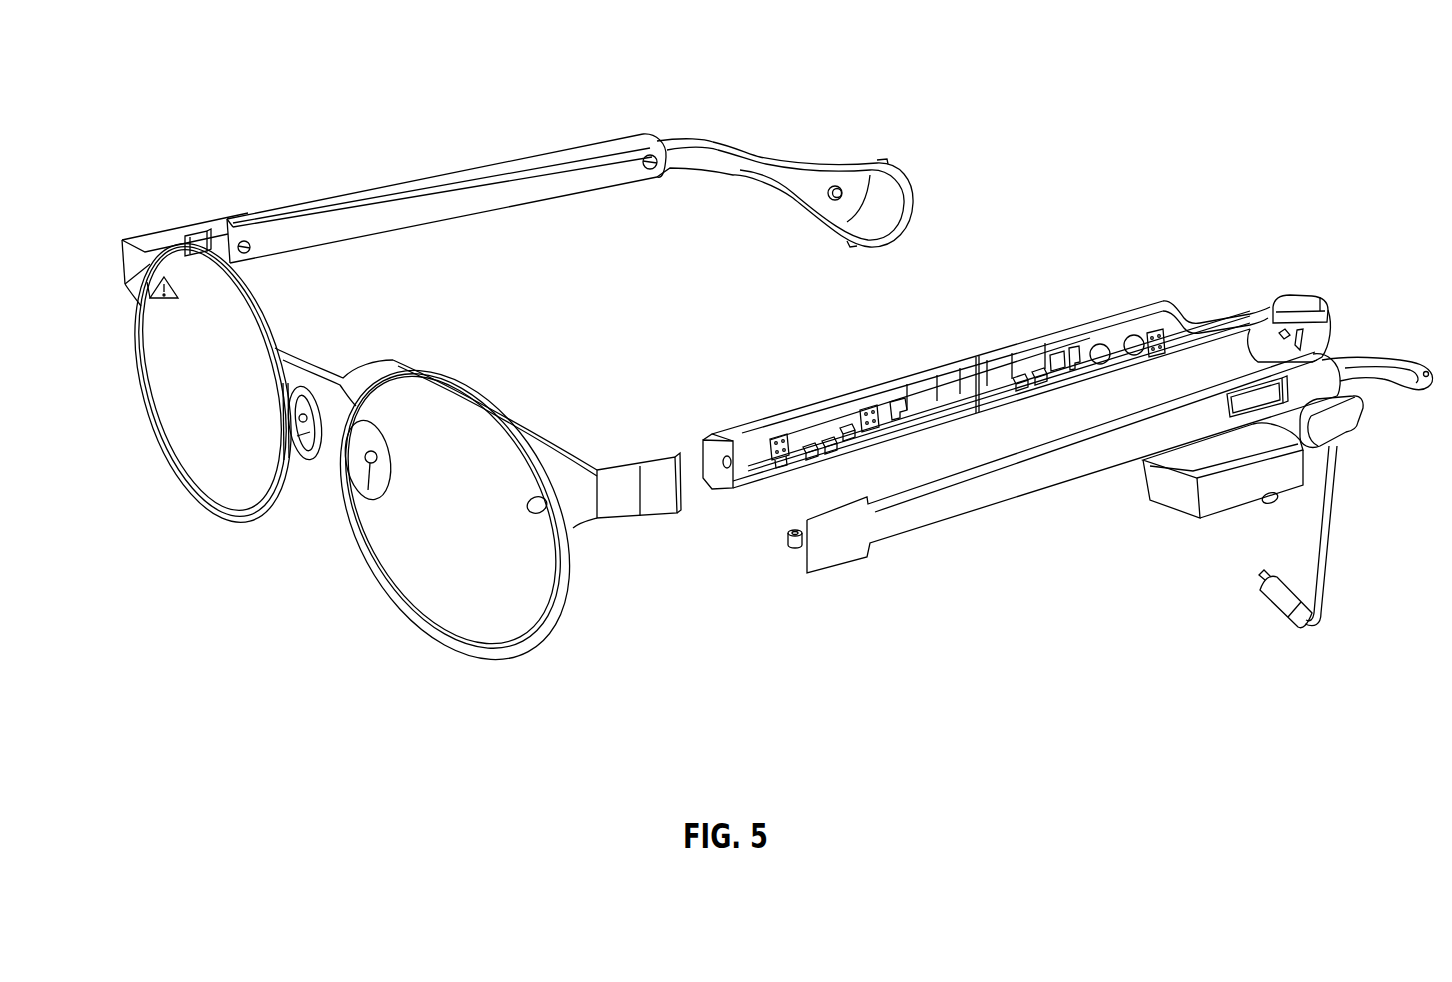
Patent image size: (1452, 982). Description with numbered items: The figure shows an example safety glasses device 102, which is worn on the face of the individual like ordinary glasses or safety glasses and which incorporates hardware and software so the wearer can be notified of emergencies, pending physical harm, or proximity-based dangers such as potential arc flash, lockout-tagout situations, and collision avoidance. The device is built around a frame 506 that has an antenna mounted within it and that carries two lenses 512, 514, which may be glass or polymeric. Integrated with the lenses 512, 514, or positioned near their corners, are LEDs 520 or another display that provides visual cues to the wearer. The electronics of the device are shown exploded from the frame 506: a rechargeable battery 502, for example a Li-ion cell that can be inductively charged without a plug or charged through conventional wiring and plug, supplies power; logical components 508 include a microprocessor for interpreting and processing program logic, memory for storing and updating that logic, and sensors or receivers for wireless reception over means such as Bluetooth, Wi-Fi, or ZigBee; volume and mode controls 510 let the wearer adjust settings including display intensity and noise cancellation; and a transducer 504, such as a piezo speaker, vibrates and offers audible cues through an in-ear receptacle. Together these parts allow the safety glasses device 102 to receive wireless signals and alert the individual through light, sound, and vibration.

The safety glasses device 102 is at (200, 64).
The rechargeable battery 502 is at (1290, 302).
The transducer 504 is at (1283, 607).
The frame 506 is at (603, 524).
The logical components 508 is at (777, 478).
The volume and mode controls 510 is at (1212, 500).
The lens 512 is at (180, 423).
The lens 514 is at (404, 583).
The LEDs 520 is at (138, 293).